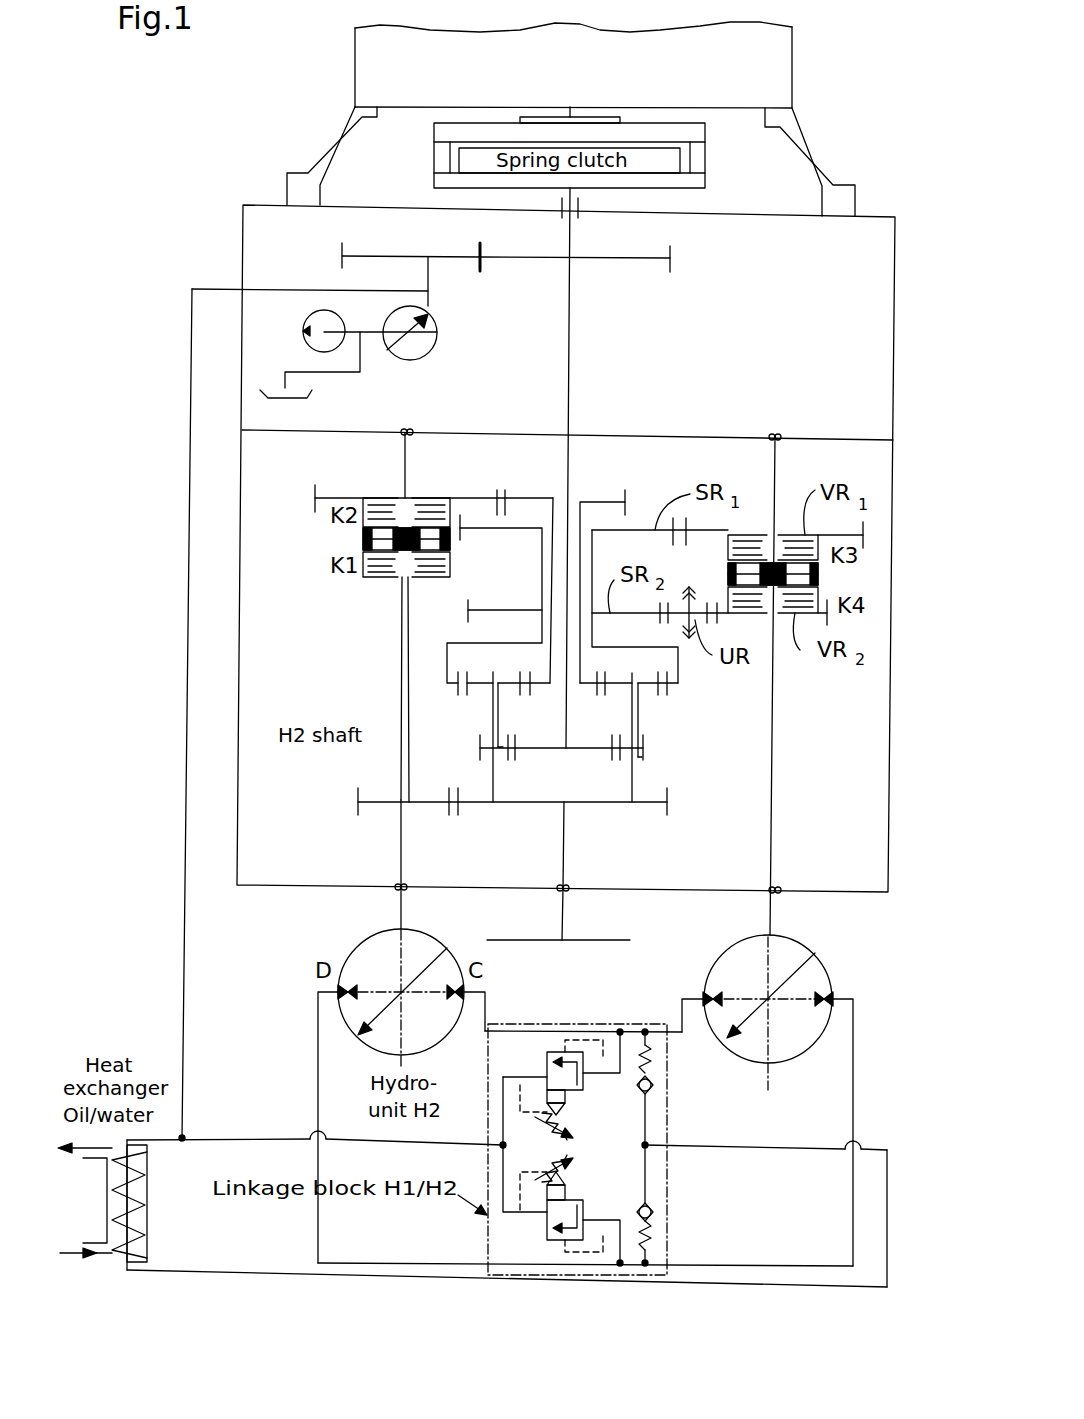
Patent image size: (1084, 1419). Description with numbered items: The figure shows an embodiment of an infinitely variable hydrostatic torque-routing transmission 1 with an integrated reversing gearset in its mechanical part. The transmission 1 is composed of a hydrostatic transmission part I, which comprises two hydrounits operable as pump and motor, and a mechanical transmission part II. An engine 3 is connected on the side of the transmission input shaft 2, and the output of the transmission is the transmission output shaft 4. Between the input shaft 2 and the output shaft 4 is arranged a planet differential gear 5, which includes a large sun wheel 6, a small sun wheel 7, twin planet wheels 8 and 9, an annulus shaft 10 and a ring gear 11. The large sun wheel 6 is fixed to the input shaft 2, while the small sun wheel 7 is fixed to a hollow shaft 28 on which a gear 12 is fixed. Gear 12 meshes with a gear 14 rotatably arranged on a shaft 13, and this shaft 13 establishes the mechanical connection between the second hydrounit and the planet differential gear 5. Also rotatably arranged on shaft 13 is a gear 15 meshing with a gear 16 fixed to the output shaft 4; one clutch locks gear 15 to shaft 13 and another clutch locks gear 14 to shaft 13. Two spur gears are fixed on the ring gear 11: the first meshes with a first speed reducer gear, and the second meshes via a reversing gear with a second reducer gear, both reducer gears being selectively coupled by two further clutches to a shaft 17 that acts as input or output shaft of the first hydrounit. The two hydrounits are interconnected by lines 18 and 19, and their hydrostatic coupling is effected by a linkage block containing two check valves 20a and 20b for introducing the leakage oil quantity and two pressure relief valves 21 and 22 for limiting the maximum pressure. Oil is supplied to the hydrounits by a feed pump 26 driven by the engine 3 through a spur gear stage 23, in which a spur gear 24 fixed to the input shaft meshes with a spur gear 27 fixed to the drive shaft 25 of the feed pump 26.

The torque-routing transmission 1 is at (836, 58).
The transmission input shaft 2 is at (572, 240).
The engine 3 is at (660, 30).
The transmission output shaft 4 is at (566, 925).
The planet differential gear 5 is at (642, 492).
The large sun wheel 6 is at (575, 750).
The small sun wheel 7 is at (580, 687).
The twin planet wheel 8 is at (488, 712).
The twin planet wheel 9 is at (640, 716).
The annulus shaft 10 is at (632, 775).
The ring gear 11 is at (680, 670).
The gear 12 is at (535, 498).
The shaft 13 is at (402, 852).
The gear 14 is at (475, 498).
The gear 15 is at (418, 798).
The gear 16 is at (577, 803).
The shaft 17 is at (777, 803).
The line 18 is at (537, 1025).
The line 19 is at (540, 1263).
The check valve 20a is at (657, 1072).
The check valve 20b is at (653, 1228).
The pressure relief valve 21 is at (570, 1098).
The pressure relief valve 22 is at (570, 1193).
The spur gear stage 23 is at (494, 302).
The spur gear 24 is at (630, 258).
The drive shaft 25 is at (406, 278).
The feed pump 26 is at (410, 360).
The spur gear 27 is at (378, 256).
The hollow shaft 28 is at (582, 520).
The hydrostatic transmission part I is at (879, 996).
The mechanical transmission part II is at (876, 582).